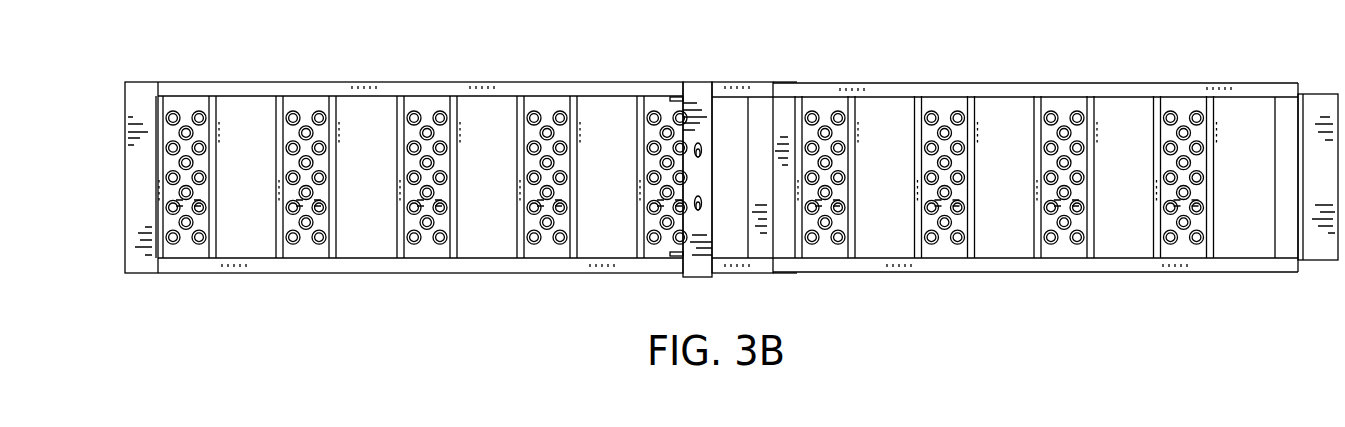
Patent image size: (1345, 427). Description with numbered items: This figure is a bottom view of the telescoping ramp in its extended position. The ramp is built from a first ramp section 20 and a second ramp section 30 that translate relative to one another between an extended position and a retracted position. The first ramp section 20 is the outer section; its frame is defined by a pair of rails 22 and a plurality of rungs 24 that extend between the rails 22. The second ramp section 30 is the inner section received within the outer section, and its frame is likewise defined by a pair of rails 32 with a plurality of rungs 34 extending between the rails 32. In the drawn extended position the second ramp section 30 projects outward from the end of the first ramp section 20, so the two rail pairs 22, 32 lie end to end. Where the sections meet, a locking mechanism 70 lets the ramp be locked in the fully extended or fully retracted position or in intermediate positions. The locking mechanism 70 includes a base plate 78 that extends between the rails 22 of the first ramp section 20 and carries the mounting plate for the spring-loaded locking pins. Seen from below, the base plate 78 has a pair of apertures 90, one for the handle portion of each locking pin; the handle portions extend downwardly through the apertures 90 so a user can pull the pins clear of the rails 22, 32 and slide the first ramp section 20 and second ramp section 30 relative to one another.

The first ramp section 20 is at (406, 139).
The rails 22 is at (305, 86).
The rungs 24 is at (432, 118).
The second ramp section 30 is at (1025, 142).
The rails 32 is at (942, 92).
The rungs 34 is at (1072, 120).
The locking mechanism 70 is at (700, 174).
The base plate 78 is at (700, 240).
The aperture 90 is at (698, 195).